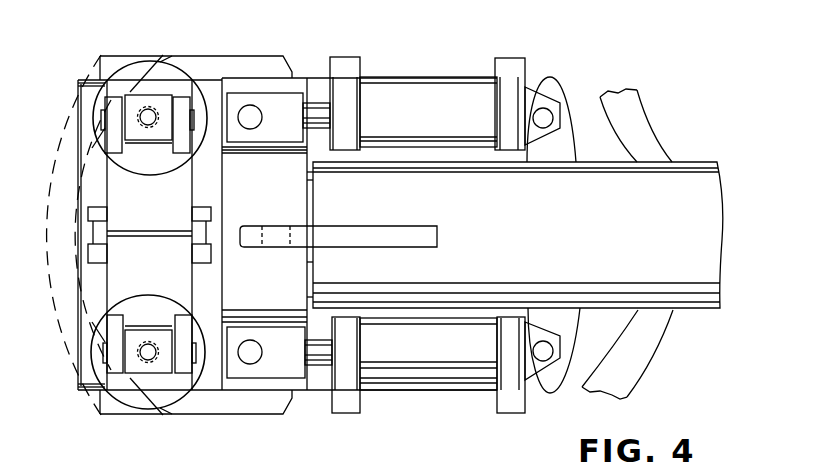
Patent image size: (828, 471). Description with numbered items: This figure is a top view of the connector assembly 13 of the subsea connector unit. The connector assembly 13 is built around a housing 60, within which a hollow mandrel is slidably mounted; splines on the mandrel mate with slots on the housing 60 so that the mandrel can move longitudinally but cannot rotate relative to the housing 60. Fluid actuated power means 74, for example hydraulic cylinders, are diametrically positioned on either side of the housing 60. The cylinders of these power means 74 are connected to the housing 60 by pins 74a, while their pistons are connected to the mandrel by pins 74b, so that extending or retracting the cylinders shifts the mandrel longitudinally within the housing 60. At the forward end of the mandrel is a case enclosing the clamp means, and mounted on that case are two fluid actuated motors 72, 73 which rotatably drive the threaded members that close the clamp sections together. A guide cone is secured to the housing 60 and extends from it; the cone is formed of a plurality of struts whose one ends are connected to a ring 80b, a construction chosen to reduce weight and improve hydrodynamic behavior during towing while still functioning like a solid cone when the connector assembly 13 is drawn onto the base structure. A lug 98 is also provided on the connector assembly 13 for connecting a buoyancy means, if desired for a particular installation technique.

The connector assembly 13 is at (628, 78).
The housing 60 is at (700, 162).
The fluid actuated motor 72 is at (117, 73).
The fluid actuated motor 73 is at (113, 390).
The fluid actuated power means 74 is at (412, 93).
The pin 74a is at (551, 113).
The pin 74b is at (258, 107).
The ring 80b is at (655, 118).
The lug 98 is at (380, 225).